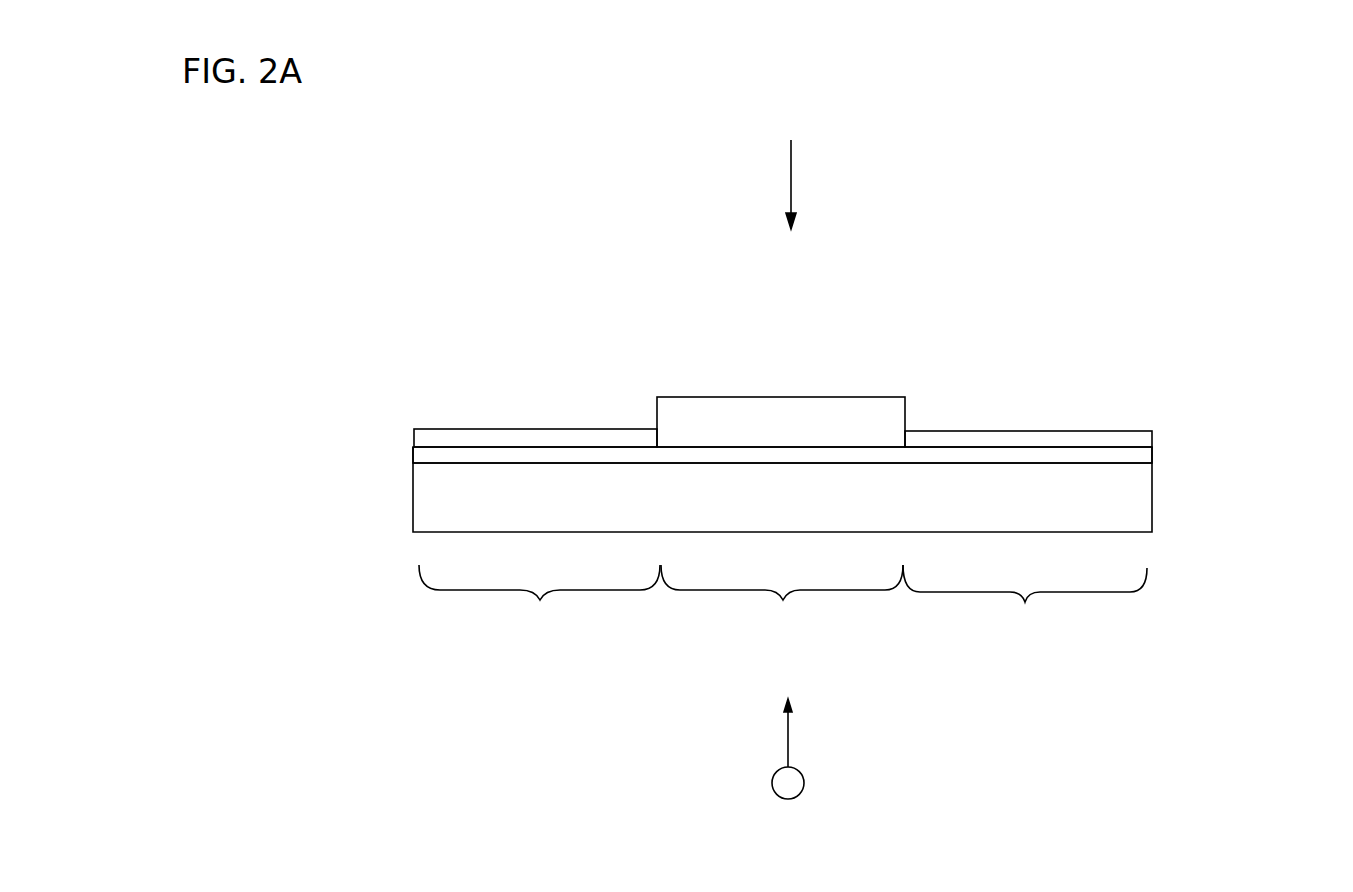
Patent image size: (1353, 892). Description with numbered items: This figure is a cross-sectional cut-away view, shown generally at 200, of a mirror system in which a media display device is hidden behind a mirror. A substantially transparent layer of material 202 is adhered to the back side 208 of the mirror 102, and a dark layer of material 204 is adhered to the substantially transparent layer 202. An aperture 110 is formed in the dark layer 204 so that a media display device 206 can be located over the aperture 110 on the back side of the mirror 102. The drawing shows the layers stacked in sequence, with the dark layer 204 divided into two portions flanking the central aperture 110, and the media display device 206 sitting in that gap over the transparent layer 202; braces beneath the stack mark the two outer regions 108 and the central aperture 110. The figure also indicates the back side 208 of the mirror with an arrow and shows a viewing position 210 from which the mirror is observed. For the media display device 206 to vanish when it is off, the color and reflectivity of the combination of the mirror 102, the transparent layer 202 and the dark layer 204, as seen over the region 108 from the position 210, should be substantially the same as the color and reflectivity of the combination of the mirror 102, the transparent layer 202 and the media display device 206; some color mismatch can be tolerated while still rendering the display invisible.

The cross-sectional view of the system 200 is at (1260, 159).
The mirror 102 is at (422, 497).
The substantially transparent layer of material 202 is at (1147, 457).
The dark layer of material 204 is at (537, 437).
The media display device 206 is at (782, 395).
The region 108 is at (540, 600).
The aperture 110 is at (783, 600).
The back side of the mirror 208 is at (791, 145).
The viewing position 210 is at (804, 783).